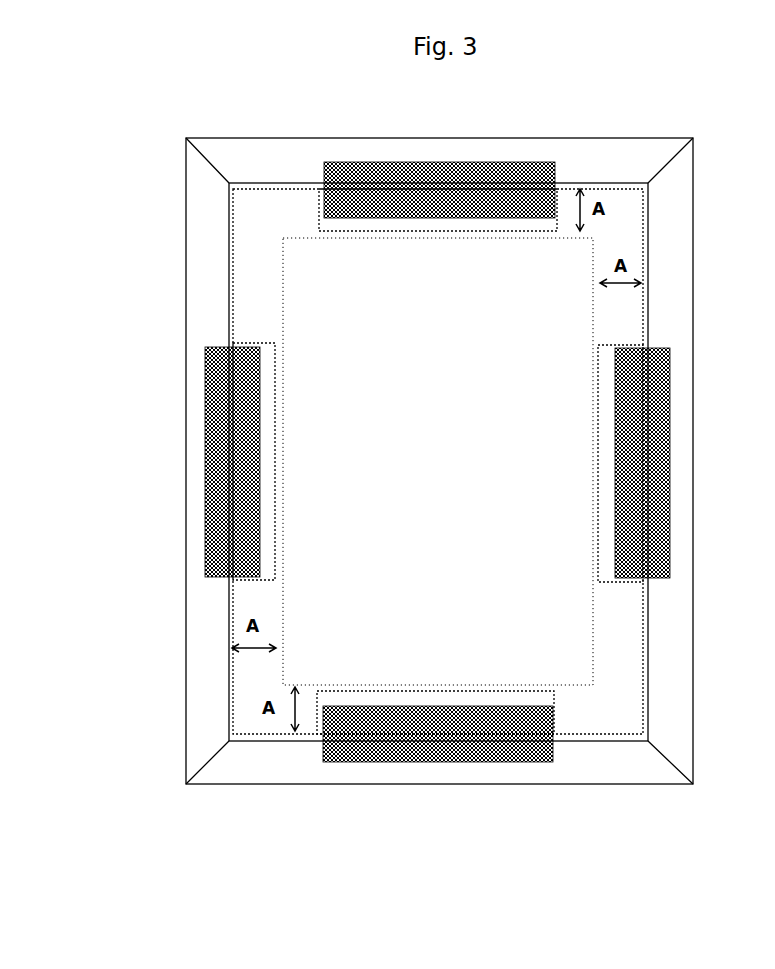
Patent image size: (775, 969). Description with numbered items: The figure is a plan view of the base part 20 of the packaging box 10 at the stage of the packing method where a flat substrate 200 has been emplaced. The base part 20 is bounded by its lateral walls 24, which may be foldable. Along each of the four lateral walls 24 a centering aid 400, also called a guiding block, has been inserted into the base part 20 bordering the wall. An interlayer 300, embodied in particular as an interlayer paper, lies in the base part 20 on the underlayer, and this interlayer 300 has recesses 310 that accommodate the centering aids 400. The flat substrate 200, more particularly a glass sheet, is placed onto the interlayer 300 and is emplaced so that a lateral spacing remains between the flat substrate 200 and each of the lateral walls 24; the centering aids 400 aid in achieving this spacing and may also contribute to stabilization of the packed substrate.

The packaging box 10 is at (234, 855).
The base part 20 is at (321, 857).
The lateral walls 24 is at (630, 158).
The flat substrate 200 is at (568, 663).
The first interlayer 300 is at (609, 705).
The recesses 310 is at (358, 222).
The centering aids 400 is at (532, 170).